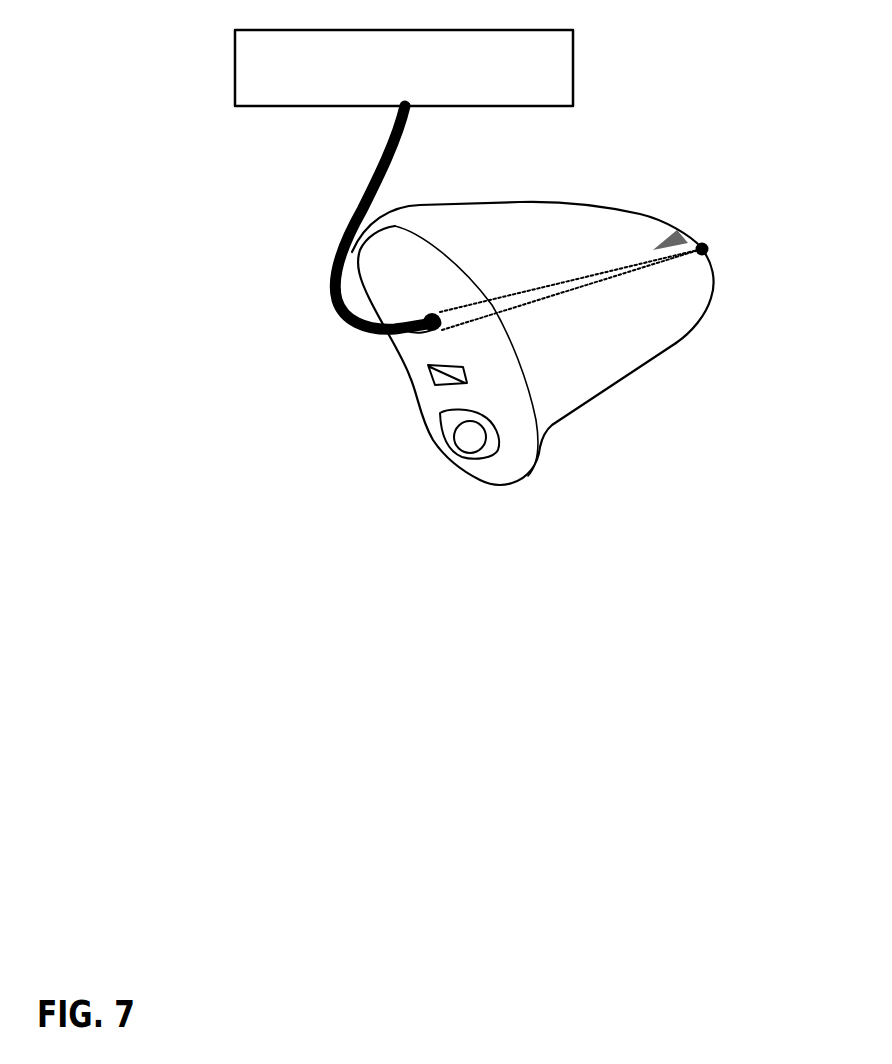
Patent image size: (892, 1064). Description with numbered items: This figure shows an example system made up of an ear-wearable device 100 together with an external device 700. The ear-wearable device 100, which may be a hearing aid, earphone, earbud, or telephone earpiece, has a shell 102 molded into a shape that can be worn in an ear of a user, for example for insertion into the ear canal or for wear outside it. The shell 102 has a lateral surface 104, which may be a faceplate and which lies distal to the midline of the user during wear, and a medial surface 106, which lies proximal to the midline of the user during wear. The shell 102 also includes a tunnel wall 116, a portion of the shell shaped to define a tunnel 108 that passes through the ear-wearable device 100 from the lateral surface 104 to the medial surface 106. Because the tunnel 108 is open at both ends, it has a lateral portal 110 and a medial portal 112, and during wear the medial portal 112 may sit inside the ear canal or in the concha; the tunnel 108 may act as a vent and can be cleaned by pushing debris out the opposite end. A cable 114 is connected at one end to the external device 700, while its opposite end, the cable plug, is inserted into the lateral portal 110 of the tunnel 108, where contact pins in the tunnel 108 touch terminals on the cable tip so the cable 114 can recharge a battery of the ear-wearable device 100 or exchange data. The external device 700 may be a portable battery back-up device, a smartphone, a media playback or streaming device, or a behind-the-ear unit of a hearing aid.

The external device 700 is at (385, 92).
The cable 114 is at (407, 140).
The ear-wearable device 100 is at (701, 238).
The medial portal 112 is at (709, 250).
The medial surface 106 is at (715, 285).
The shell 102 is at (672, 338).
The tunnel wall 116 is at (572, 274).
The lateral portal 110 is at (437, 312).
The tunnel 108 is at (440, 329).
The lateral surface 104 is at (418, 358).